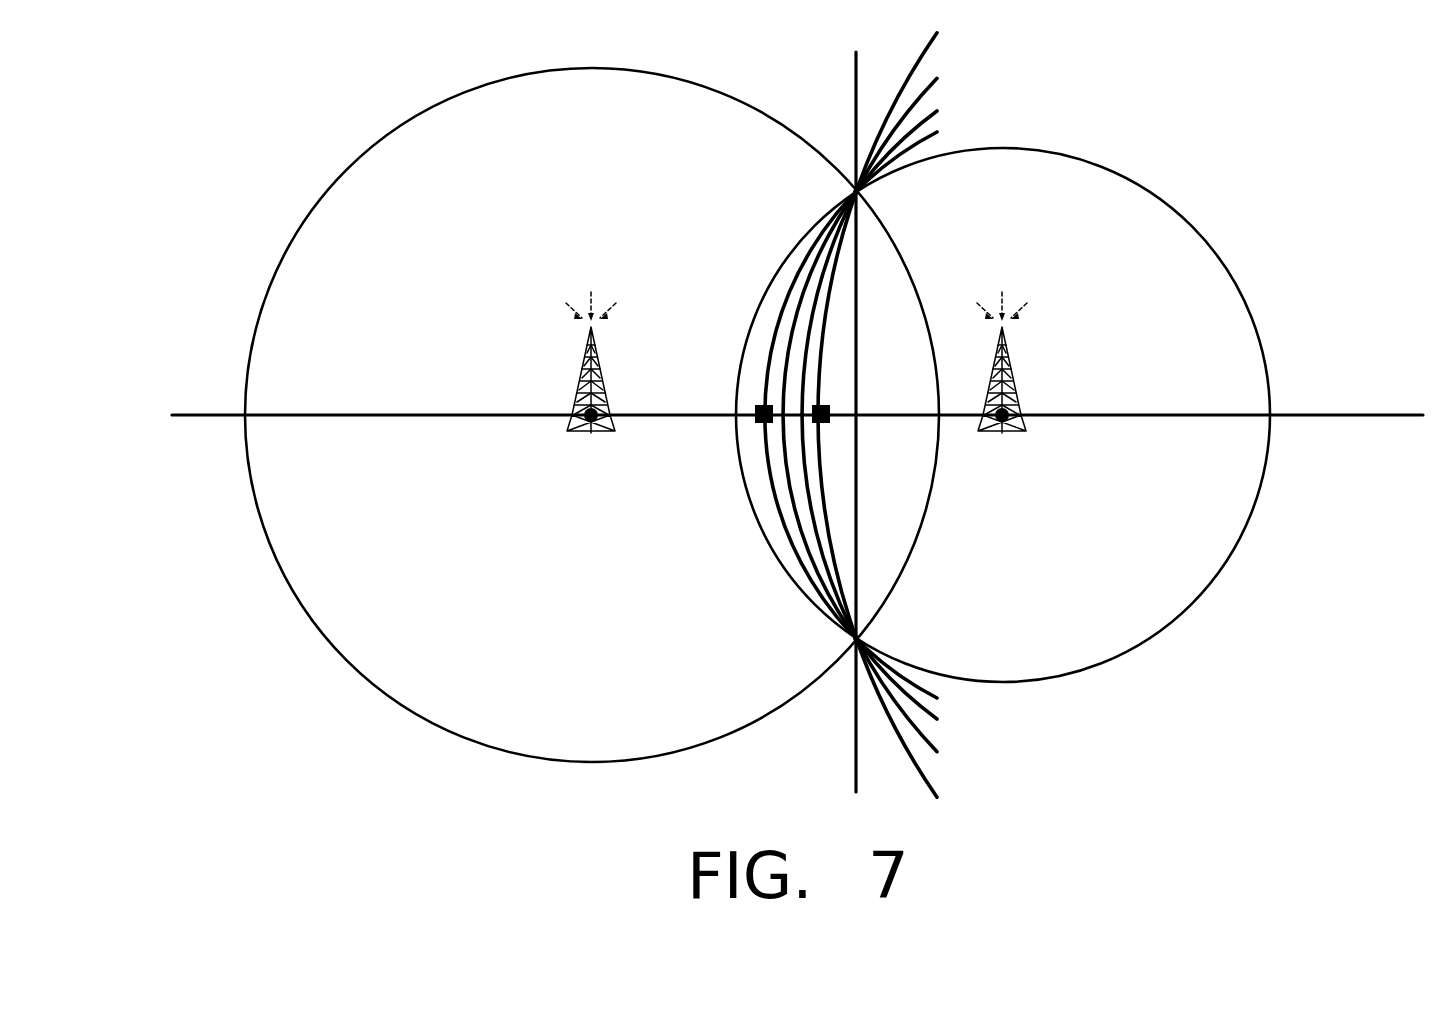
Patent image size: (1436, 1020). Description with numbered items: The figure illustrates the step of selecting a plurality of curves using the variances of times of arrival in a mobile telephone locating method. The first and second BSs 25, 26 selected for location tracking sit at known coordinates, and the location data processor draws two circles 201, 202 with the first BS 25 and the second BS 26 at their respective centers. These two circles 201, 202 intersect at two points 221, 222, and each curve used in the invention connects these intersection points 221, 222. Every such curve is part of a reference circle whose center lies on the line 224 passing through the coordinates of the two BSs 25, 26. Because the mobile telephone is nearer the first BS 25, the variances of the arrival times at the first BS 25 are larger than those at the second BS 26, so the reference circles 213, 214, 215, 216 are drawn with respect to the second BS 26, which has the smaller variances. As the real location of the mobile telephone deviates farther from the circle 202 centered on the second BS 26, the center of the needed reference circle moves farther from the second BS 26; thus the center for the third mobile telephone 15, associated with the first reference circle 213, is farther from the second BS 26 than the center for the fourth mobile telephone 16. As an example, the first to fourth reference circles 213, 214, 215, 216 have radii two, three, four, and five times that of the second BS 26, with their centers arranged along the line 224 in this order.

The third mobile telephone 15 is at (758, 406).
The fourth mobile telephone 16 is at (815, 406).
The first BS 25 is at (598, 435).
The second BS 26 is at (1008, 396).
The first circle 201 is at (408, 120).
The second circle 202 is at (1186, 215).
The first reference circle 213 is at (762, 453).
The second reference circle 214 is at (780, 478).
The third reference circle 215 is at (807, 508).
The fourth reference circle 216 is at (830, 552).
The intersection point 221 is at (862, 196).
The intersection point 222 is at (864, 636).
The line 224 is at (1369, 411).